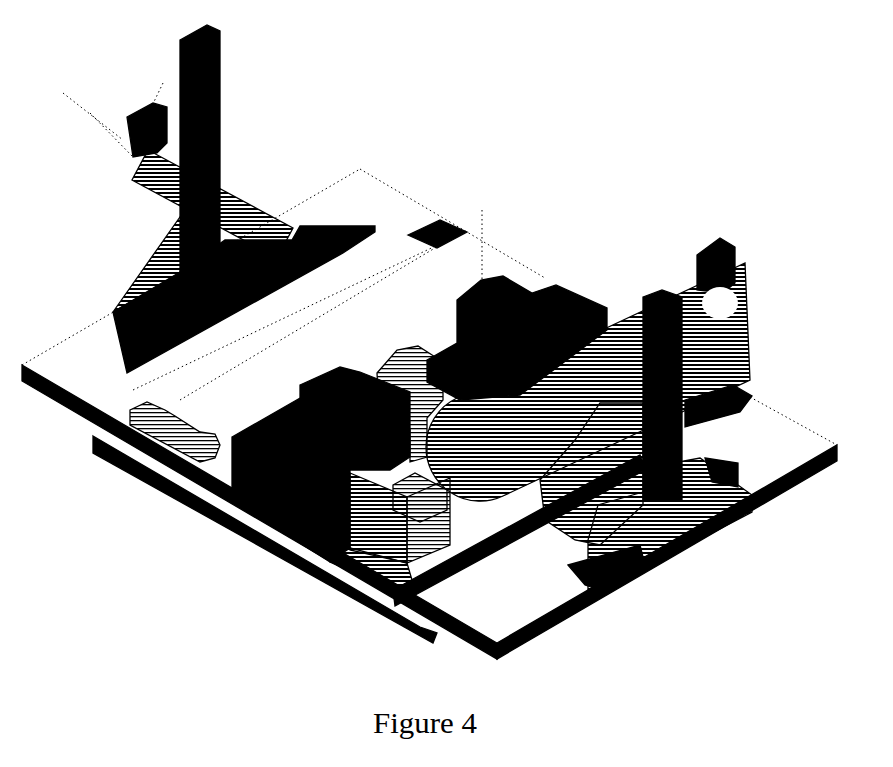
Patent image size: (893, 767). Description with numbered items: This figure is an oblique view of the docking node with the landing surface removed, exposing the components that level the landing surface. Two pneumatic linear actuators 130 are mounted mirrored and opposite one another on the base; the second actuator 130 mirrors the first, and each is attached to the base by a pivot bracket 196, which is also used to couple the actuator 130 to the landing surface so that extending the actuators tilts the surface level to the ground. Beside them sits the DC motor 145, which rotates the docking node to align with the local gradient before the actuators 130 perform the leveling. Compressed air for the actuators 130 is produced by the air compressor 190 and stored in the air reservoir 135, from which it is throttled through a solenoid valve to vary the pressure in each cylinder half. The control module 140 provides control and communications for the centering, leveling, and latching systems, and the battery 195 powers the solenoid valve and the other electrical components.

The pneumatic linear actuator 130 is at (232, 189).
The air reservoir 135 is at (613, 303).
The control module 140 is at (297, 460).
The DC motor 145 is at (390, 367).
The air compressor 190 is at (430, 540).
The battery 195 is at (292, 509).
The pivot bracket 196 is at (668, 543).